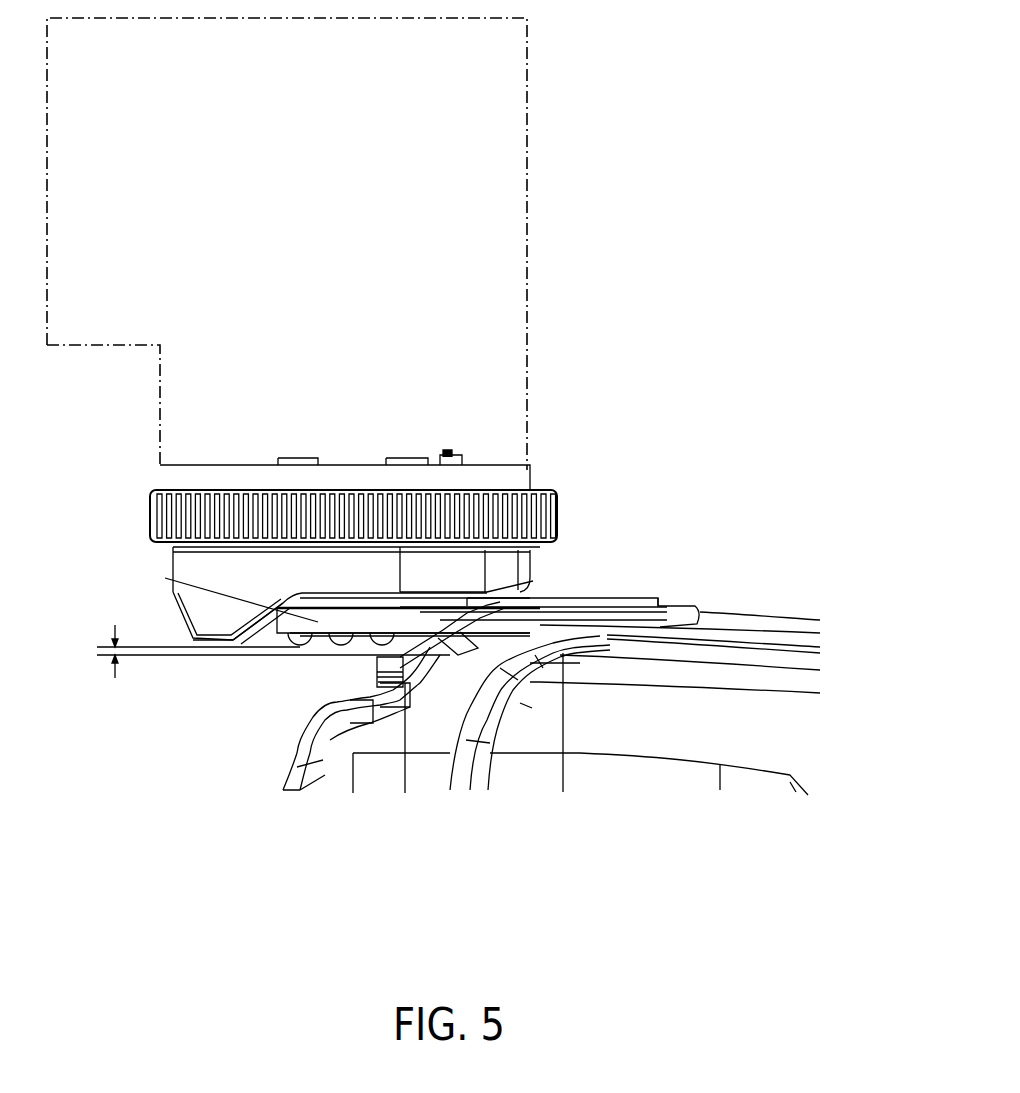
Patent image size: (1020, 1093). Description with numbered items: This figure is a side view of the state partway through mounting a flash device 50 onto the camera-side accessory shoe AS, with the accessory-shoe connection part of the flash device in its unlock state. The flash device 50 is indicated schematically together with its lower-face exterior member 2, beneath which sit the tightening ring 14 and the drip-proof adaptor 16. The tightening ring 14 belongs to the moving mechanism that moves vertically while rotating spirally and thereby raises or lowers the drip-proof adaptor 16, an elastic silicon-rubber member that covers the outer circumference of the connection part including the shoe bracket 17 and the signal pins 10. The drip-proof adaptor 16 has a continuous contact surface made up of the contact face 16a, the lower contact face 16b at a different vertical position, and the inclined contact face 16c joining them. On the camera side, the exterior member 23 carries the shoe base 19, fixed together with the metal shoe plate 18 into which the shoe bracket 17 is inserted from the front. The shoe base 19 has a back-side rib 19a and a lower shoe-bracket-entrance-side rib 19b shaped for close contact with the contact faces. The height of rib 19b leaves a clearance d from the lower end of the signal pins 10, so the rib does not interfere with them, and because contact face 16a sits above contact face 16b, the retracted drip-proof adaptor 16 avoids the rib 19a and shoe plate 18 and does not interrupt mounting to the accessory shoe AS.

The flash device 50 is at (527, 133).
The lower-face exterior member 2 is at (481, 478).
The tightening ring 14 is at (549, 490).
The drip-proof adaptor 16 is at (217, 608).
The contact face 16a is at (375, 596).
The contact face 16b is at (248, 645).
The inclined contact face 16c is at (302, 650).
The shoe bracket 17 is at (165, 578).
The signal pins 10 is at (352, 656).
The clearance d is at (260, 651).
The shoe plate 18 is at (580, 600).
The accessory shoe AS is at (603, 584).
The shoe base 19 is at (690, 608).
The rib 19a is at (630, 600).
The rib 19b is at (380, 658).
The exterior member 23 is at (653, 708).